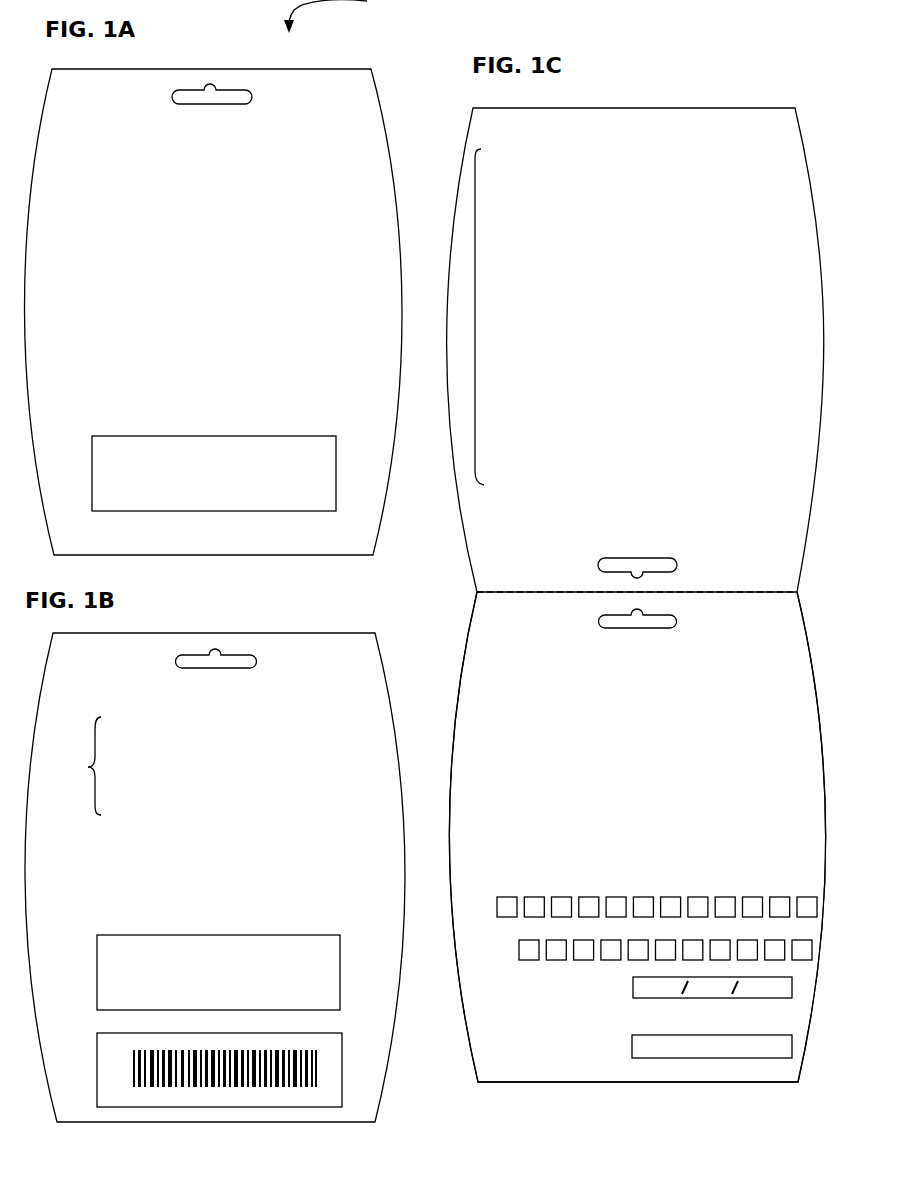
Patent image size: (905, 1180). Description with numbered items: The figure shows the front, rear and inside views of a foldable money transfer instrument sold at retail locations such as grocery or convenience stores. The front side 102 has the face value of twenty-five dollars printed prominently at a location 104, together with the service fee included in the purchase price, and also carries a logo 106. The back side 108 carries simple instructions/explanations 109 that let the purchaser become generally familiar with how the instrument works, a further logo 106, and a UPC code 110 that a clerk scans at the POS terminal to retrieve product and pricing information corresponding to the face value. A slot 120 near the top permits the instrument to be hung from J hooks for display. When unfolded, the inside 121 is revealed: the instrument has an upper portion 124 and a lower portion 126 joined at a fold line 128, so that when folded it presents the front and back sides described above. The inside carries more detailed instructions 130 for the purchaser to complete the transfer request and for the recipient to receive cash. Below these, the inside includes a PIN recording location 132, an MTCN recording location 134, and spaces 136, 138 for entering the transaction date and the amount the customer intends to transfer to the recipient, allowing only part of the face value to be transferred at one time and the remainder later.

In FIG. 1A, the front side 102 is at (156, 292).
In FIG. 1A, the face value location 104 is at (350, 173).
In FIG. 1A, the logo 106 is at (210, 436).
In FIG. 1B, the logo 106 is at (273, 937).
In FIG. 1B, the back side 108 is at (333, 697).
In FIG. 1B, the instructions/explanations 109 is at (90, 768).
In FIG. 1B, the UPC code 110 is at (342, 1060).
In FIG. 1A, the slot 120 is at (172, 95).
In FIG. 1B, the slot 120 is at (227, 655).
In FIG. 1C, the slot 120 is at (678, 622).
In FIG. 1C, the inside 121 is at (739, 689).
In FIG. 1C, the upper portion 124 is at (815, 502).
In FIG. 1C, the lower portion 126 is at (818, 711).
In FIG. 1C, the fold line 128 is at (552, 593).
In FIG. 1C, the detailed instructions 130 is at (475, 308).
In FIG. 1C, the PIN recording location 132 is at (777, 897).
In FIG. 1C, the MTCN recording location 134 is at (802, 940).
In FIG. 1C, the transaction date space 136 is at (792, 987).
In FIG. 1C, the recipient amount space 138 is at (792, 1047).